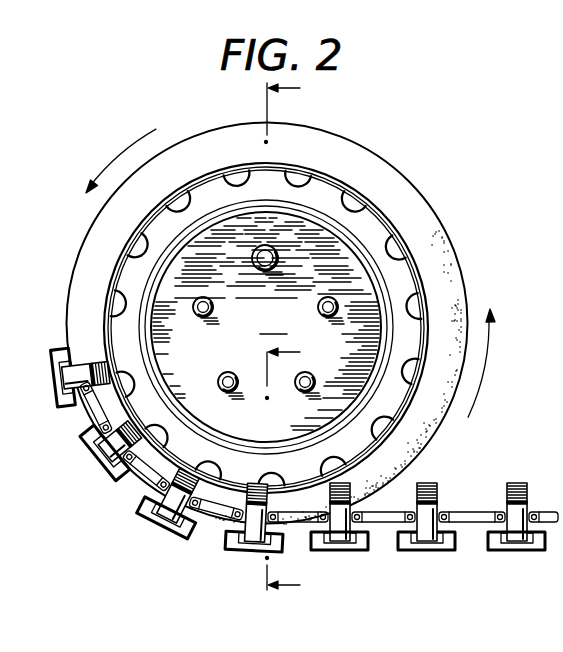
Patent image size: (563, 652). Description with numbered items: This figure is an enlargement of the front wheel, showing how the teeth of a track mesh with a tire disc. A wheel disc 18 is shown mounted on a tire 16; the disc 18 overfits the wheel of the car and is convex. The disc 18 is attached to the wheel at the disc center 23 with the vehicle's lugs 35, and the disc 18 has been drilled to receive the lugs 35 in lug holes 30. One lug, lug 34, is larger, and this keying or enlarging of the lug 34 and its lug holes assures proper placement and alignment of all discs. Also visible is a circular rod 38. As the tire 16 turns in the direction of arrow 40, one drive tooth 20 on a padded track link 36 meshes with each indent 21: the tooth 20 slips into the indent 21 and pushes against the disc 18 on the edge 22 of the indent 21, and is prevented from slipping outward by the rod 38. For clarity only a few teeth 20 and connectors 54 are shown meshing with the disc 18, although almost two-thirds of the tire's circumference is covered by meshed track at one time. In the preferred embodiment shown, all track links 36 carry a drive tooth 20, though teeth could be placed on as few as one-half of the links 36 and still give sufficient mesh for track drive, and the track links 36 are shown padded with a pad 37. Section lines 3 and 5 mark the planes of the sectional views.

The section line 3- 3 is at (307, 340).
The section line 5- 5 is at (295, 370).
The tire 16 is at (370, 172).
The wheel disc 18 is at (240, 414).
The drive tooth 20 is at (503, 498).
The indent 21 is at (357, 204).
The edge 22 is at (427, 377).
The disc center 23 is at (275, 323).
The lug holes 30 is at (318, 305).
The lug 34 is at (254, 264).
The lugs 35 is at (358, 344).
The track link 36 is at (363, 553).
The pad 37 is at (518, 548).
The circular rod 38 is at (417, 277).
The arrow 40 is at (478, 392).
The connectors 54 is at (472, 520).